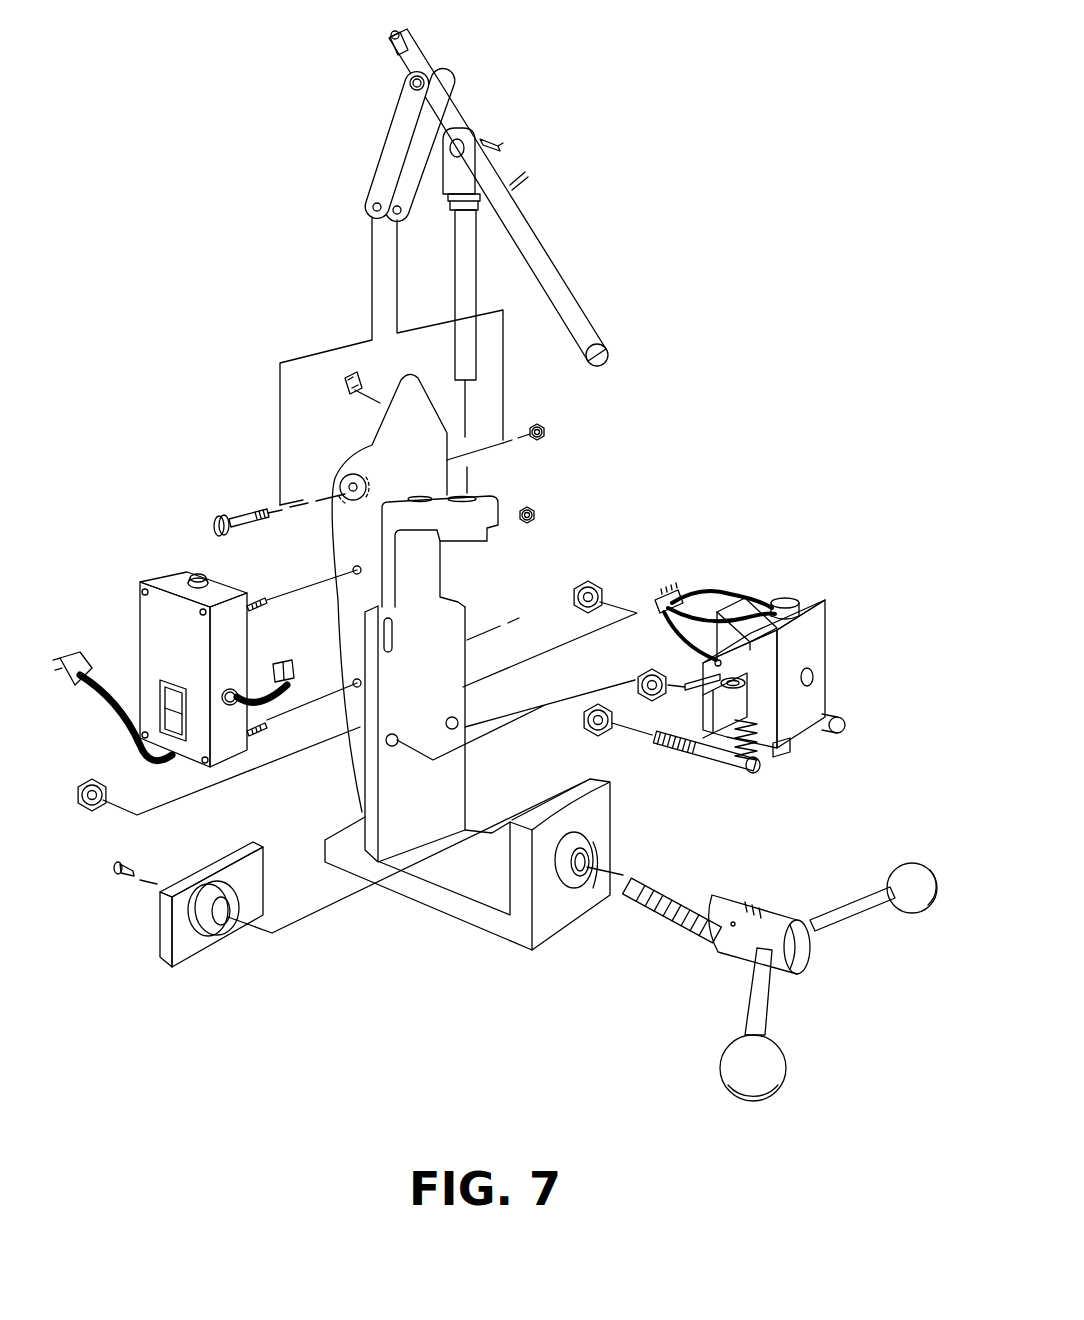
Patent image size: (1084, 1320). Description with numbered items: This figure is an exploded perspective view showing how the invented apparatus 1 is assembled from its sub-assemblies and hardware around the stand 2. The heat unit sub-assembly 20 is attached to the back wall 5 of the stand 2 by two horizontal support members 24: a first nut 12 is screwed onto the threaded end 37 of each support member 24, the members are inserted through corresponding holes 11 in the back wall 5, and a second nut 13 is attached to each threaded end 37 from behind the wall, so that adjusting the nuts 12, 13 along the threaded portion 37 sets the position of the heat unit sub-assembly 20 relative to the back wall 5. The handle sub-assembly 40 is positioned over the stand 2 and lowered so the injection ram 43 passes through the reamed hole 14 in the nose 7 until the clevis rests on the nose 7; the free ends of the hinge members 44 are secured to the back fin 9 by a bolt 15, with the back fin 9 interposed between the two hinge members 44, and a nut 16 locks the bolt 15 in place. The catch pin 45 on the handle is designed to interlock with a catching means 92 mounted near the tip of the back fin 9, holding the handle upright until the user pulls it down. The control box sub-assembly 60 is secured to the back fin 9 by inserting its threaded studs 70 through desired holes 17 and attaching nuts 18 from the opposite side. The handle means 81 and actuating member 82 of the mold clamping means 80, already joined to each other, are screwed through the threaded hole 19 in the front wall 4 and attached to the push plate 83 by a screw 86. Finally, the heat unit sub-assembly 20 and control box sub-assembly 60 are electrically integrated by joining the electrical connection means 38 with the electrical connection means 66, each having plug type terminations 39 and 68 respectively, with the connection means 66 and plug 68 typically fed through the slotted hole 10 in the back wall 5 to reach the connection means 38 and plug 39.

The invented apparatus 1 is at (753, 408).
The stand 2 is at (548, 976).
The front wall 4 is at (577, 898).
The back wall 5 is at (440, 790).
The nose 7 is at (468, 515).
The back fin 9 is at (355, 540).
The slotted hole 10 is at (393, 643).
The holes 11 is at (452, 717).
The first nut 12 is at (642, 668).
The second nut 13 is at (590, 583).
The reamed hole 14 is at (470, 487).
The bolt 15 is at (247, 512).
The nut 16 is at (537, 422).
The holes 17 is at (355, 683).
The nuts 18 is at (528, 527).
The threaded hole 19 is at (590, 850).
The heat unit sub-assembly 20 is at (850, 609).
The horizontal support members 24 is at (843, 732).
The threaded end 37 is at (667, 745).
The electrical connection means 38 is at (703, 594).
The plug 39 is at (657, 596).
The handle sub-assembly 40 is at (518, 180).
The injection ram 43 is at (467, 287).
The hinge members 44 is at (388, 172).
The catch pin 45 is at (396, 37).
The control box sub-assembly 60 is at (112, 573).
The electrical connection means 66 is at (262, 698).
The plug 68 is at (289, 680).
The threaded studs 70 is at (261, 600).
The mold clamping means 80 is at (688, 1098).
The handle means 81 is at (753, 907).
The actuating member 82 is at (653, 913).
The push plate 83 is at (162, 953).
The screw 86 is at (117, 868).
The catching means 92 is at (345, 387).